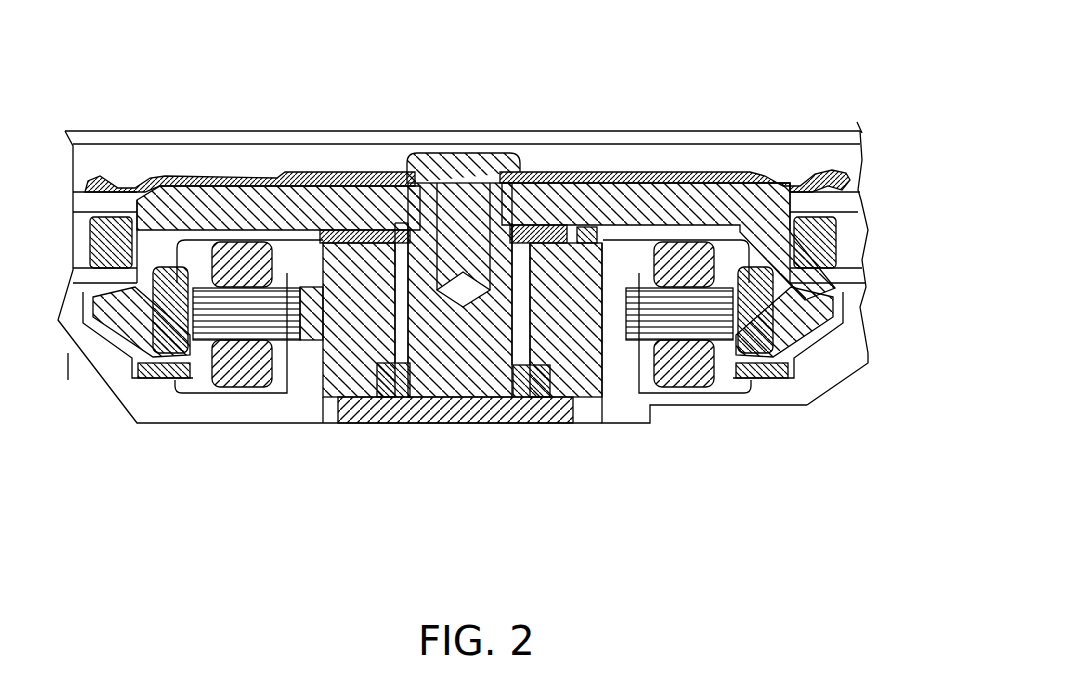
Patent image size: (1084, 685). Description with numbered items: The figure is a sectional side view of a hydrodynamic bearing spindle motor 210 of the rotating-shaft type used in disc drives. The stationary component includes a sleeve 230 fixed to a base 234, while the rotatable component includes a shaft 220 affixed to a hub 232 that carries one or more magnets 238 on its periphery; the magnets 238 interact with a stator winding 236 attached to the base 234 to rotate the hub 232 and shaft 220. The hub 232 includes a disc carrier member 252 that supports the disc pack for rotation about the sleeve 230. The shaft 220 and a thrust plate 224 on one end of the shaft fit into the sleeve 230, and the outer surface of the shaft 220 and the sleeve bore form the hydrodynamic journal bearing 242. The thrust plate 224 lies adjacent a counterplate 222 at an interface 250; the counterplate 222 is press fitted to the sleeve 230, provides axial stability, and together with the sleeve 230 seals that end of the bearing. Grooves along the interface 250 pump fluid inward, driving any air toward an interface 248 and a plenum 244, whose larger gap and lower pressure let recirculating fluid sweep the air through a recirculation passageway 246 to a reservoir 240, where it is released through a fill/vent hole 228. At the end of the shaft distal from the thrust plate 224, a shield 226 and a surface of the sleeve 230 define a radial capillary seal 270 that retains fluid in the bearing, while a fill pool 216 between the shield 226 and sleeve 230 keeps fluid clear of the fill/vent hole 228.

The hydrodynamic bearing spindle motor 210 is at (330, 86).
The fill pool 216 is at (607, 220).
The shaft 220 is at (474, 369).
The counterplate 222 is at (483, 380).
The thrust plate 224 is at (544, 414).
The shield 226 is at (543, 238).
The fill/vent hole 228 is at (580, 238).
The sleeve 230 is at (574, 325).
The hub 232 is at (745, 182).
The base 234 is at (633, 405).
The stator winding 236 is at (697, 337).
The magnet 238 is at (760, 337).
The reservoir 240 is at (562, 243).
The hydrodynamic journal bearing 242 is at (503, 322).
The plenum 244 is at (517, 414).
The recirculation passageway 246 is at (563, 400).
The interface 248 is at (543, 400).
The interface 250 is at (493, 414).
The disc carrier member 252 is at (823, 297).
The radial capillary seal 270 is at (531, 190).